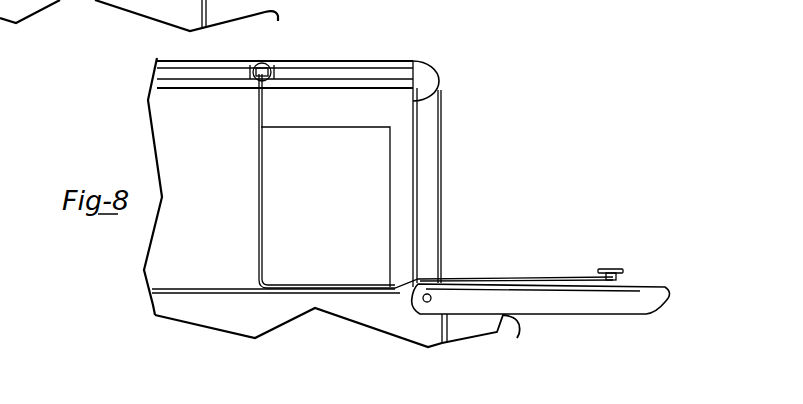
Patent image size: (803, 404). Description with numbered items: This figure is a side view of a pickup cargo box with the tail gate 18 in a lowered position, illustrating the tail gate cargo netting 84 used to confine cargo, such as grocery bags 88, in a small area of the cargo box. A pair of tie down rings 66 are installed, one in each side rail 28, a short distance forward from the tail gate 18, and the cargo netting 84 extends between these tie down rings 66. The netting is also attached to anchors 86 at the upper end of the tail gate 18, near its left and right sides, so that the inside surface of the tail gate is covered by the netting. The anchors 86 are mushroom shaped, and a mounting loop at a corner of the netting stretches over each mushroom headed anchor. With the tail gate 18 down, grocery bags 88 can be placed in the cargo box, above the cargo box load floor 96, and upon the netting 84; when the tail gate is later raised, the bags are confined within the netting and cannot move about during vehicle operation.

The tail gate 18 is at (608, 312).
The side rail 28 is at (355, 61).
The tie down ring 66 is at (266, 65).
The tail gate cargo netting 84 is at (252, 122).
The anchor 86 is at (620, 272).
The grocery bags 88 is at (352, 147).
The cargo box load floor 96 is at (218, 290).